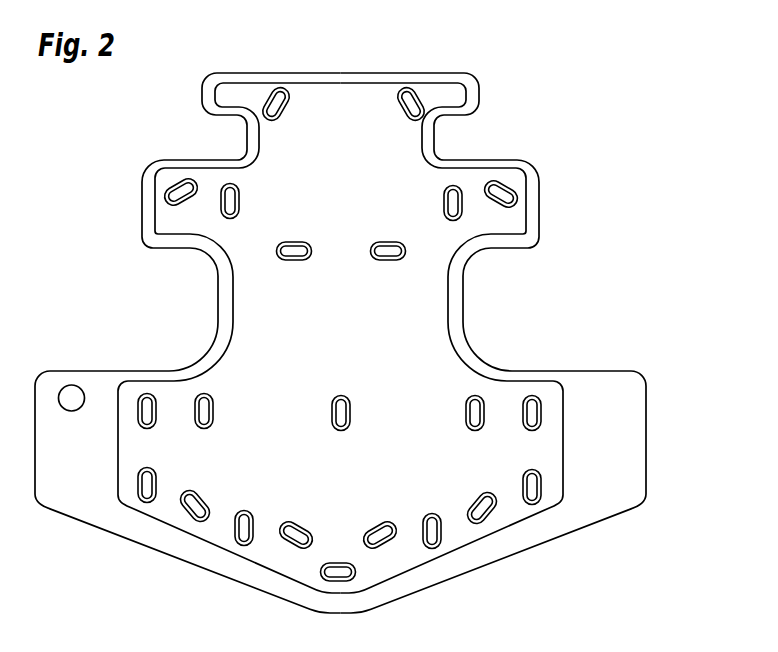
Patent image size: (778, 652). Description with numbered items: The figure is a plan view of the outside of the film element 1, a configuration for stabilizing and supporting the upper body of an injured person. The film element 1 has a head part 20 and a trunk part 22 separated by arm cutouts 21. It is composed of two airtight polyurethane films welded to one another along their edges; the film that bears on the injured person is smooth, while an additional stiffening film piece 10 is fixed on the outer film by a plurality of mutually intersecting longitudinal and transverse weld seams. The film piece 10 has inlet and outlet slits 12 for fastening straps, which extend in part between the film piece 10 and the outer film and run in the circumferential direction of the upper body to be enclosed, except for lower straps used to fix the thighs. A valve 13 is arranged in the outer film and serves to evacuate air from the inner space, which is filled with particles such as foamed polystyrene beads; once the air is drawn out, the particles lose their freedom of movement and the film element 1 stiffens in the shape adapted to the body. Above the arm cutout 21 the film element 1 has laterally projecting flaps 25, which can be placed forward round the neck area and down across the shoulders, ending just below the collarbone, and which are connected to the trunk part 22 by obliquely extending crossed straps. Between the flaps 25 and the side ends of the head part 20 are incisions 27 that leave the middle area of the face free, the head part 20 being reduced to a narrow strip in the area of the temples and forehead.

The film element 1 is at (572, 515).
The stiffening film piece 10 is at (445, 357).
The inlet and outlet slits 12 is at (465, 202).
The valve 13 is at (72, 398).
The head part 20 is at (477, 100).
The arm cutouts 21 is at (493, 272).
The trunk part 22 is at (600, 472).
The laterally projecting flaps 25 is at (533, 227).
The incisions 27 is at (218, 127).